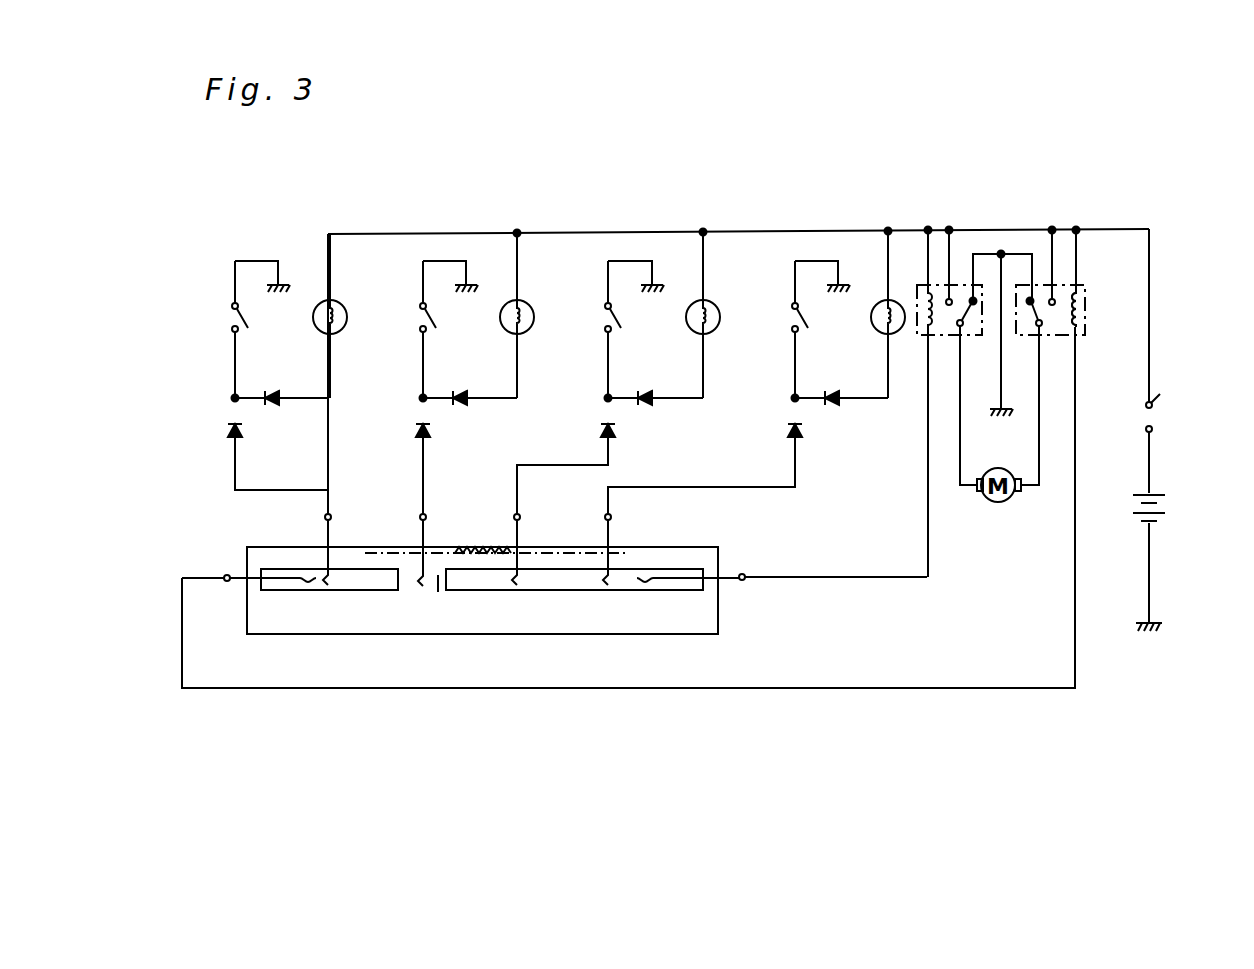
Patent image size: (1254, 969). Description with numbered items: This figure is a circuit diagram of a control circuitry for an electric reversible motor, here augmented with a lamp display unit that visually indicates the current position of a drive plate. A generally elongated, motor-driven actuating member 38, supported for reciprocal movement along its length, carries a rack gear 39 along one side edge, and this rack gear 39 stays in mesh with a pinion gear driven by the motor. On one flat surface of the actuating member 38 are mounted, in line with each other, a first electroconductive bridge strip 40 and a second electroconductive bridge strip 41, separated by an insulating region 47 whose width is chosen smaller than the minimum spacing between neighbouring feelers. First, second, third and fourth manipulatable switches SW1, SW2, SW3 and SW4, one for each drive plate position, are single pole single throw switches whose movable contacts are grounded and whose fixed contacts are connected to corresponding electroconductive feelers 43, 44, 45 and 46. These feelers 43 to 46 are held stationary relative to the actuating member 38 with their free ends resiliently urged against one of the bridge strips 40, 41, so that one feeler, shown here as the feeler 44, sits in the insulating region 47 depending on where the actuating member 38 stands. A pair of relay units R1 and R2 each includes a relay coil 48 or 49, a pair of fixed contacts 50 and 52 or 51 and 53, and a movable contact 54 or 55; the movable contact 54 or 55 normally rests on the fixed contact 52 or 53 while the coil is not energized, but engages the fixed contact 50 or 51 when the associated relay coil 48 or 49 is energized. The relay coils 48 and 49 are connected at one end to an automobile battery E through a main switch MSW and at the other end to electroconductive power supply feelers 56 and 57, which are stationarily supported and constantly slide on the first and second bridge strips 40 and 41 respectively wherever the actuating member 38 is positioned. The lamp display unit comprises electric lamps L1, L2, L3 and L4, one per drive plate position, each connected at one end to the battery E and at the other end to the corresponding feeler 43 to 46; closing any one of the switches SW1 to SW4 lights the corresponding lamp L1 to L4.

The actuating member 38 is at (708, 605).
The rack gear 39 is at (490, 548).
The first electroconductive bridge strip 40 is at (297, 568).
The second electroconductive bridge strip 41 is at (675, 569).
The electroconductive feeler 43 is at (332, 584).
The electroconductive feeler 44 is at (420, 586).
The electroconductive feeler 45 is at (512, 584).
The electroconductive feeler 46 is at (607, 586).
The insulating region 47 is at (437, 582).
The relay coil 48 is at (1082, 310).
The relay coil 49 is at (920, 318).
The fixed contact 50 is at (1076, 296).
The fixed contact 51 is at (947, 299).
The fixed contact 52 is at (1032, 298).
The fixed contact 53 is at (975, 298).
The movable contact 54 is at (1054, 299).
The movable contact 55 is at (958, 320).
The power supply feeler 56 is at (282, 582).
The power supply feeler 57 is at (683, 586).
The first switch SW1 is at (232, 320).
The second switch SW2 is at (420, 320).
The third switch SW3 is at (605, 320).
The fourth switch SW4 is at (792, 320).
The electric lamp L1 is at (314, 322).
The electric lamp L2 is at (501, 322).
The electric lamp L3 is at (686, 322).
The electric lamp L4 is at (871, 322).
The relay unit R1 is at (1058, 336).
The relay unit R2 is at (945, 336).
The main switch MSW is at (1153, 410).
The automobile battery E is at (1162, 500).